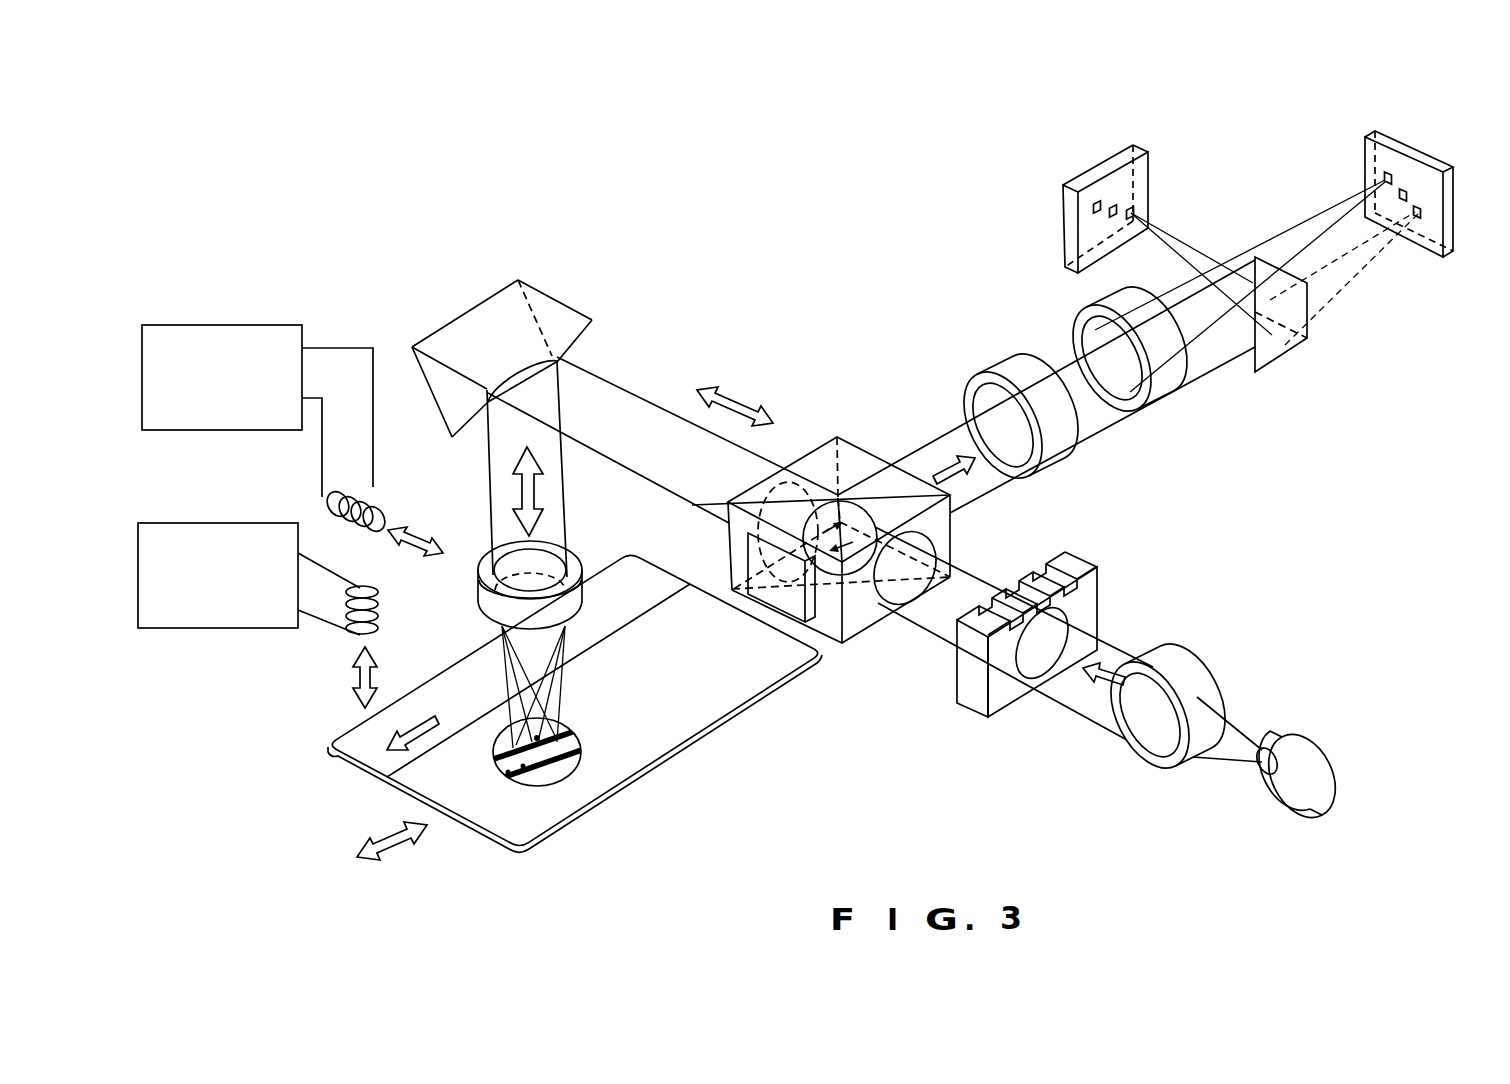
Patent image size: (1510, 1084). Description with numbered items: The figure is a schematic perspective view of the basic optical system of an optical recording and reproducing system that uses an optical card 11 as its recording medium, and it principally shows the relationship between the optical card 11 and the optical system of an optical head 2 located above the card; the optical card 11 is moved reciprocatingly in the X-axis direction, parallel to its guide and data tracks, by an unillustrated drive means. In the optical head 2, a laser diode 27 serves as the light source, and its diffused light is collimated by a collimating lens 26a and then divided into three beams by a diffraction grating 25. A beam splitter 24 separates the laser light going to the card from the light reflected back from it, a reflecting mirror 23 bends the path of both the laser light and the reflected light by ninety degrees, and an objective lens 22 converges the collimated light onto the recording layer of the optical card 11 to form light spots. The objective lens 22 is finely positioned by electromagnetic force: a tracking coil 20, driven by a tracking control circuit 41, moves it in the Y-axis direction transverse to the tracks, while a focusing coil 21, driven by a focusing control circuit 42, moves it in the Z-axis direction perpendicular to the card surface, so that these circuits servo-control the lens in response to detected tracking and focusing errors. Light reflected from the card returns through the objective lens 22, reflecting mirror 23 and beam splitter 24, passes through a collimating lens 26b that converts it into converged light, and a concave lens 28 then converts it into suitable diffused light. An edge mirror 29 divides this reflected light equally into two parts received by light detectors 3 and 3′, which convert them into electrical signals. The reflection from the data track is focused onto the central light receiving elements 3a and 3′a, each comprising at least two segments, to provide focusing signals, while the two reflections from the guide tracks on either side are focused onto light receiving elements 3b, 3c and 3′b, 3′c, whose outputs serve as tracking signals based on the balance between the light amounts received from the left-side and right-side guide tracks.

The optical head 2 is at (807, 308).
The light detector 3 is at (1460, 226).
The light receiving element 3a is at (1408, 190).
The light receiving element 3b is at (1390, 173).
The light receiving element 3c is at (1425, 212).
The light detector 3′ is at (1170, 206).
The light receiving element 3′a is at (1112, 219).
The light receiving element 3′b is at (1095, 203).
The light receiving element 3′c is at (1131, 212).
The optical card 11 is at (737, 715).
The tracking coil 20 is at (382, 489).
The focusing coil 21 is at (352, 636).
The objective lens 22 is at (587, 562).
The reflecting mirror 23 is at (562, 294).
The beam splitter 24 is at (855, 445).
The diffraction grating 25 is at (1100, 620).
The collimating lens 26a is at (1228, 680).
The collimating lens 26b is at (1052, 463).
The laser diode 27 is at (1340, 778).
The concave lens 28 is at (1160, 400).
The edge mirror 29 is at (1290, 345).
The tracking control circuit 41 is at (230, 325).
The focusing control circuit 42 is at (205, 523).